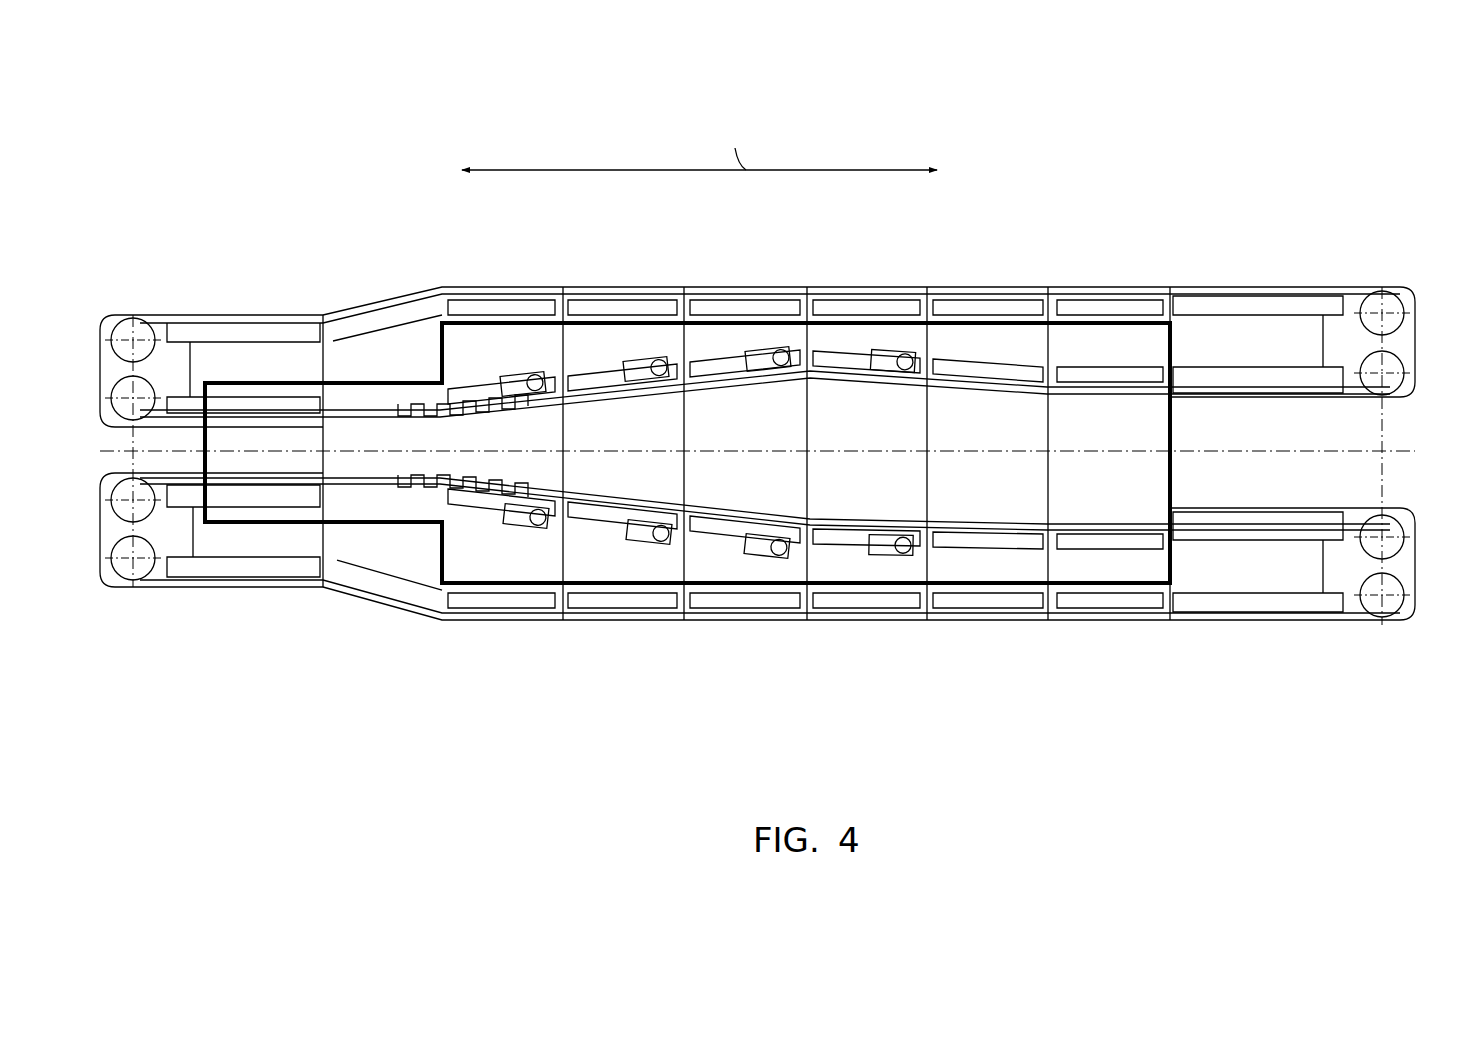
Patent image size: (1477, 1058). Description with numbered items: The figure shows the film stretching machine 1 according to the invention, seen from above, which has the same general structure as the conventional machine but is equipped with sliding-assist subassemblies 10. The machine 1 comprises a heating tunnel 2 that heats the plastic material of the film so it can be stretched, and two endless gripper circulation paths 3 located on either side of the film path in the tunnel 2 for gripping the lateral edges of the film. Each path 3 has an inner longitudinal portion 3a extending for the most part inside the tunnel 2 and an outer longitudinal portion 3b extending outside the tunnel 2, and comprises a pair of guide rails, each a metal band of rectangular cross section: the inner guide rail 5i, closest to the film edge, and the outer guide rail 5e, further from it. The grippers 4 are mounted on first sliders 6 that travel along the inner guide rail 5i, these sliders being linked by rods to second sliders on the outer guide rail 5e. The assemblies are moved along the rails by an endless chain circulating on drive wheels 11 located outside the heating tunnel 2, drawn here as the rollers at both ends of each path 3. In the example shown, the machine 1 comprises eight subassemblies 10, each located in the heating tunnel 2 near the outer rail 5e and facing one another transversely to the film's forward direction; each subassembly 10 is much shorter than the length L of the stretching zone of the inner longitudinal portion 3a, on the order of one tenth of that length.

The machine 1 is at (1263, 152).
The heating tunnel 2 is at (897, 323).
The endless gripper circulation path 3 is at (1390, 282).
The inner longitudinal portion 3a is at (1240, 508).
The outer longitudinal portion 3b is at (1265, 287).
The gripper 4 is at (398, 428).
The inner guide rail 5i is at (593, 393).
The outer guide rail 5e is at (692, 384).
The first slider 6 is at (788, 637).
The subassembly 10 is at (497, 377).
The drive wheel 11 is at (152, 388).